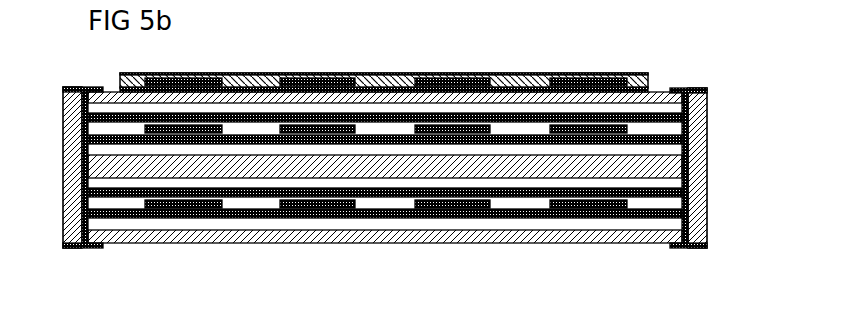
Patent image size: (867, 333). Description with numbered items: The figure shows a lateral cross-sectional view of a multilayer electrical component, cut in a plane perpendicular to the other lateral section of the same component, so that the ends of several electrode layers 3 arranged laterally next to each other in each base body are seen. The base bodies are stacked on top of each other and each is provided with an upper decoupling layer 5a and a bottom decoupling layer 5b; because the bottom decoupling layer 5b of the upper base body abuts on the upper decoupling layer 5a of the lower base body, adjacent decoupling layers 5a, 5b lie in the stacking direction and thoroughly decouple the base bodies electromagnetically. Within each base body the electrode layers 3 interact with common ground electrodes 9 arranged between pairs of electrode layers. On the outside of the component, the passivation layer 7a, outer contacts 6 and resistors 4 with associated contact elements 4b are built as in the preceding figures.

The electrode layer 3 is at (594, 113).
The resistor 4 is at (443, 76).
The contact electrode 4b is at (486, 86).
The upper decoupling layer 5a is at (95, 182).
The bottom decoupling layer 5b is at (704, 156).
The outer contact 6 is at (70, 107).
The passivation layer 7a is at (257, 74).
The ground electrode 9 is at (682, 110).